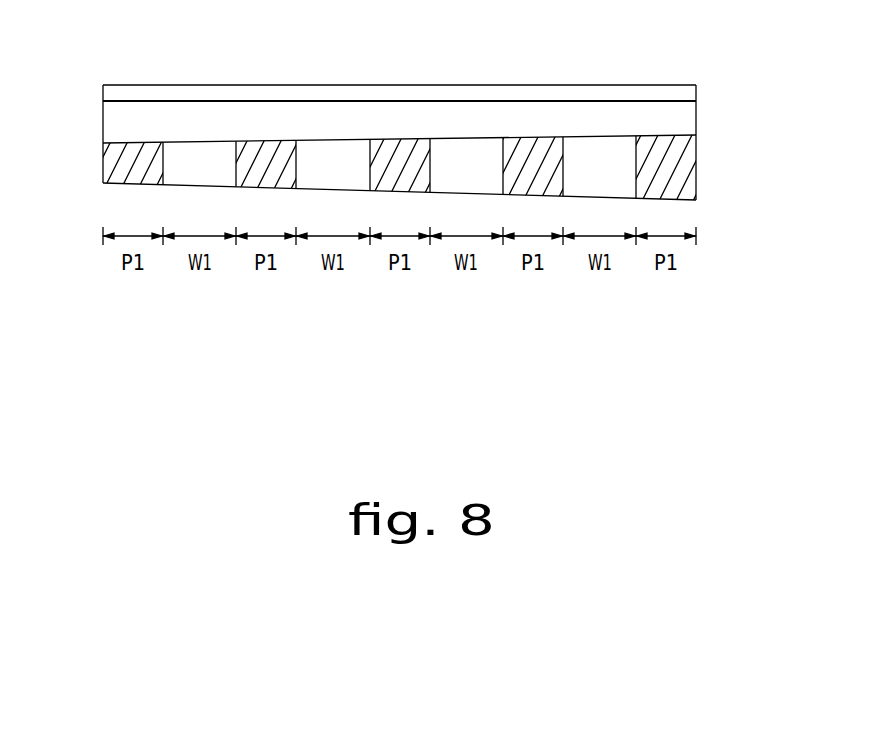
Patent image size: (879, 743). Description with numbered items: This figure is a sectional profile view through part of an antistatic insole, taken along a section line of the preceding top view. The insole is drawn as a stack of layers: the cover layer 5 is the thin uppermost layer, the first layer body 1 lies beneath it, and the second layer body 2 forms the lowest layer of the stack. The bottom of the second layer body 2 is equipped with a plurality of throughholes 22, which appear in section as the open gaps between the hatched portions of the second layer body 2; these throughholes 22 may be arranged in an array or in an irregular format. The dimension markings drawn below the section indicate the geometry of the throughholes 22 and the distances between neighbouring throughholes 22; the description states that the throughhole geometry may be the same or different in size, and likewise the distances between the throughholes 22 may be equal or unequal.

The first layer body 1 is at (690, 117).
The second layer body 2 is at (128, 179).
The cover layer 5 is at (641, 92).
The throughholes 22 is at (197, 160).